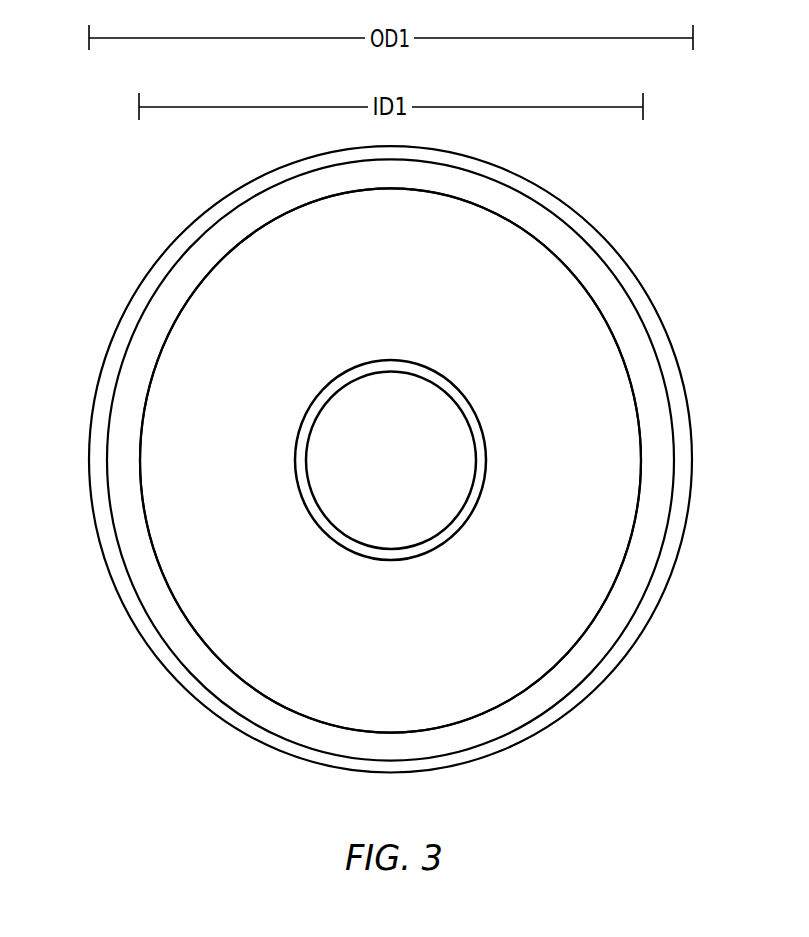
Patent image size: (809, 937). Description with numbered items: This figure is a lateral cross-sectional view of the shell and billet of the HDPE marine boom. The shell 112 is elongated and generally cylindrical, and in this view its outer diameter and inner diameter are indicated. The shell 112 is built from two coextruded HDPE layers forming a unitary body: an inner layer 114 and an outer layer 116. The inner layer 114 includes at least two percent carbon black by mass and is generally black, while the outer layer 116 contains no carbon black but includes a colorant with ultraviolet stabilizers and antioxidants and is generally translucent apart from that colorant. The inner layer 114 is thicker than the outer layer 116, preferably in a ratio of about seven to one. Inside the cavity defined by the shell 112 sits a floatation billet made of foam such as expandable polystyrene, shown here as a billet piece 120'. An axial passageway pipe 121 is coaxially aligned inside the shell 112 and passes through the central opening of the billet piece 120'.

The shell 112 is at (662, 315).
The outer layer 116 is at (678, 412).
The inner layer 114 is at (645, 545).
The billet piece 120' is at (390, 460).
The axial passageway pipe 121 is at (433, 550).